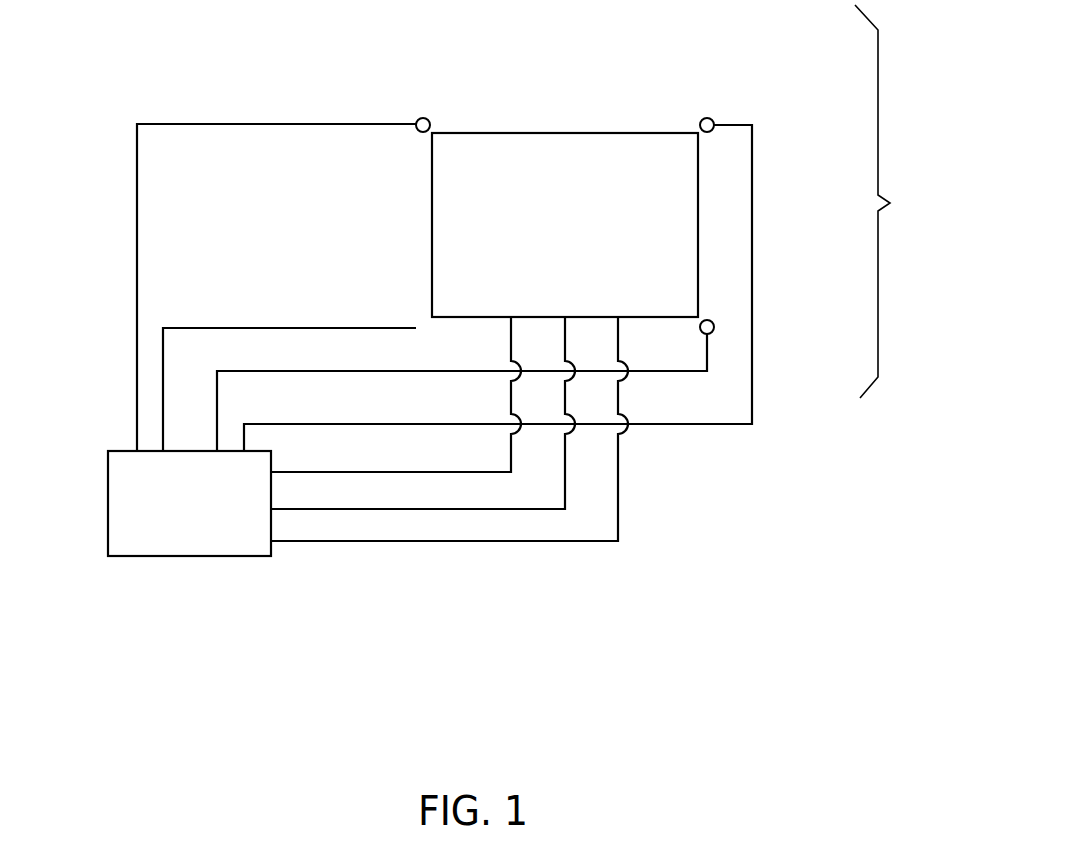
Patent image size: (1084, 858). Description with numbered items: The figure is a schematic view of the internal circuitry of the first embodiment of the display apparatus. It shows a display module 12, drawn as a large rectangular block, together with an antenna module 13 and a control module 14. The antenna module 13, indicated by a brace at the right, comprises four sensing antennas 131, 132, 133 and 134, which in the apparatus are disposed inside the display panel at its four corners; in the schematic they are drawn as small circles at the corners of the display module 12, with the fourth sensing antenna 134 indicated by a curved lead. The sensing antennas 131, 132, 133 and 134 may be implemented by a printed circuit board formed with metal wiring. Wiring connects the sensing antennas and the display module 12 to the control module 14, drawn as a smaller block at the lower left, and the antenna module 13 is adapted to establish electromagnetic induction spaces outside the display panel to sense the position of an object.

The display module 12 is at (563, 146).
The antenna module 13 is at (889, 201).
The sensing antenna 131 is at (711, 119).
The sensing antenna 132 is at (714, 327).
The sensing antenna 133 is at (427, 118).
The sensing antenna 134 is at (428, 332).
The control module 14 is at (146, 525).